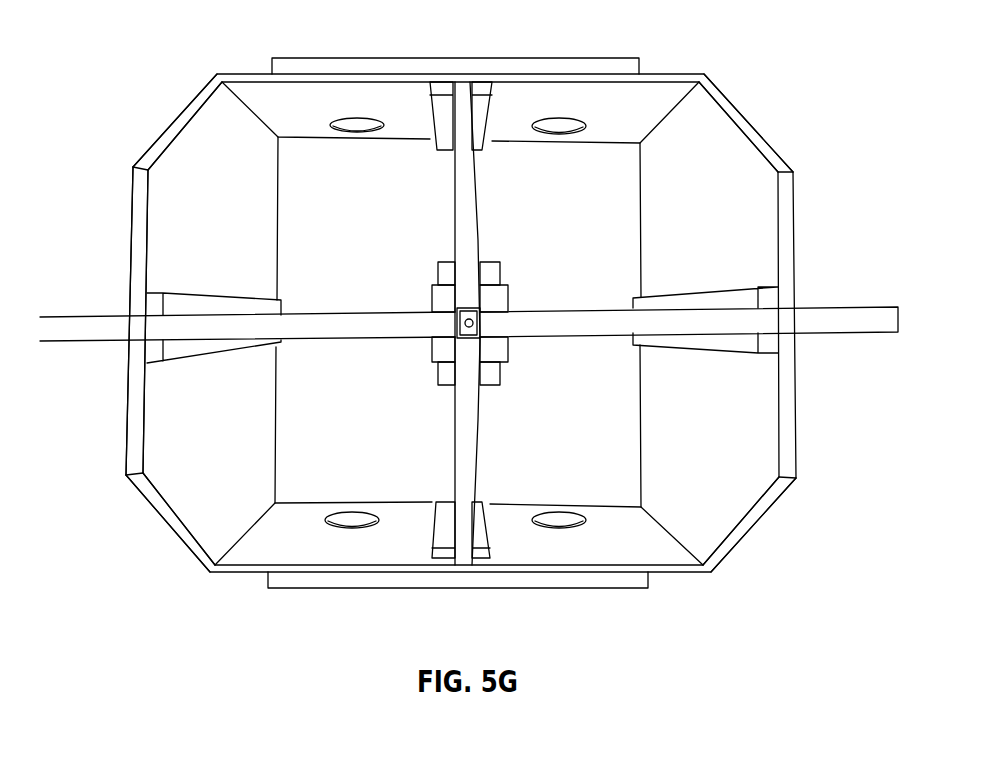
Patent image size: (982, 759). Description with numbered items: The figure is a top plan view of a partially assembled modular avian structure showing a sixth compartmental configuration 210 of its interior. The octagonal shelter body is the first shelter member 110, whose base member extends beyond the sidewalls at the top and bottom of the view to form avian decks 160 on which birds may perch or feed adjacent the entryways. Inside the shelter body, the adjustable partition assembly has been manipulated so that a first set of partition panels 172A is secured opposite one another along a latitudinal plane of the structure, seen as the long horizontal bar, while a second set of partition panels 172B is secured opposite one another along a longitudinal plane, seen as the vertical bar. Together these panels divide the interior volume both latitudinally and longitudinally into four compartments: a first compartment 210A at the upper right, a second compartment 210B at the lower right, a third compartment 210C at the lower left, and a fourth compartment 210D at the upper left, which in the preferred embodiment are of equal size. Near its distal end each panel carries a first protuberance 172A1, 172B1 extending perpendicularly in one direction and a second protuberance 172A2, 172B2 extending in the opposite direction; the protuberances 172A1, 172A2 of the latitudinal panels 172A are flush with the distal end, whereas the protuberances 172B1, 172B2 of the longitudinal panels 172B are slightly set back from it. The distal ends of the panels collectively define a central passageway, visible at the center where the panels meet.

The first shelter member 110 is at (127, 403).
The avian deck 160 is at (608, 67).
The partition panel 172A is at (67, 325).
The first protuberance 172A1 is at (545, 279).
The second protuberance 172A2 is at (545, 366).
The partition panel 172B is at (456, 106).
The first protuberance 172B1 is at (494, 262).
The second protuberance 172B2 is at (415, 412).
The sixth compartmental configuration 210 is at (122, 103).
The first compartment 210A is at (721, 148).
The second compartment 210B is at (721, 488).
The third compartment 210C is at (225, 510).
The fourth compartment 210D is at (190, 247).